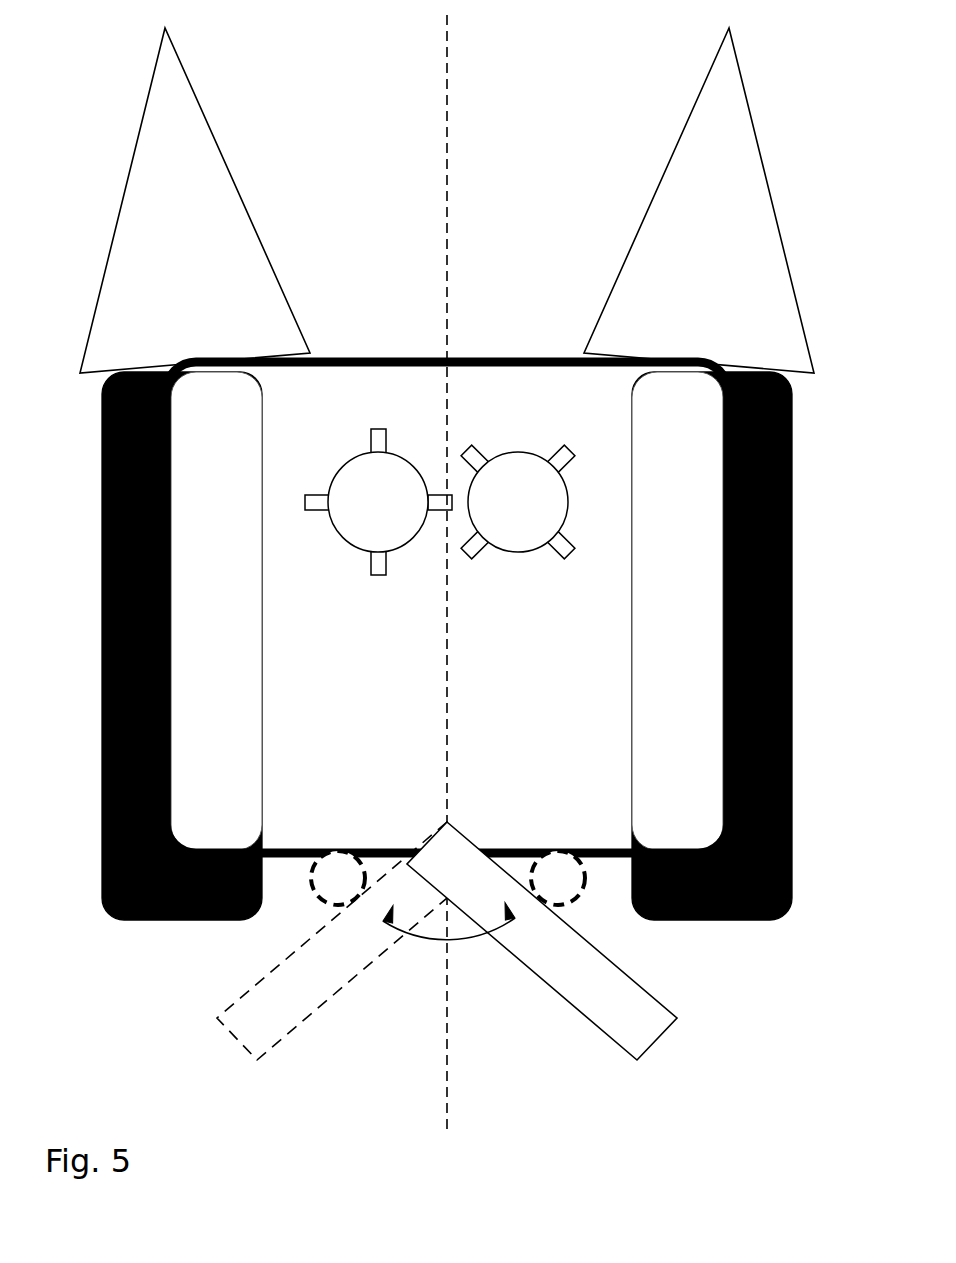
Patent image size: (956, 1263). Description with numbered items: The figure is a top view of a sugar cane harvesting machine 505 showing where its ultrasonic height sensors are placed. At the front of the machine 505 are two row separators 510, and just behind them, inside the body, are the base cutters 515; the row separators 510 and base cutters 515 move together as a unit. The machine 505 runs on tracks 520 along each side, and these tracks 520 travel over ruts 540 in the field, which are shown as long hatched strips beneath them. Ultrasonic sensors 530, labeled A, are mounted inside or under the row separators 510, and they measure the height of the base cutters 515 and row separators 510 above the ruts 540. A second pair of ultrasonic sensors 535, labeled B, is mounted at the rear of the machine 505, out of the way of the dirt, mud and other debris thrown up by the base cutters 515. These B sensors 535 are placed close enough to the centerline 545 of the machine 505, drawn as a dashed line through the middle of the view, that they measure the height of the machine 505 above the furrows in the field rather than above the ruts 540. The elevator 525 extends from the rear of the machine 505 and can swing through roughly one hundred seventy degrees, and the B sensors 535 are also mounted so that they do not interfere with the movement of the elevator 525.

The sugar cane harvesting machine 505 is at (423, 689).
The row separators 510 is at (199, 197).
The base cutters 515 is at (396, 514).
The tracks 520 is at (110, 515).
The elevator 525 is at (577, 995).
The ultrasonic sensors ("A") 530 is at (193, 283).
The ultrasonic sensors ("B") 535 is at (330, 862).
The ruts 540 is at (258, 53).
The centerline 545 is at (455, 113).